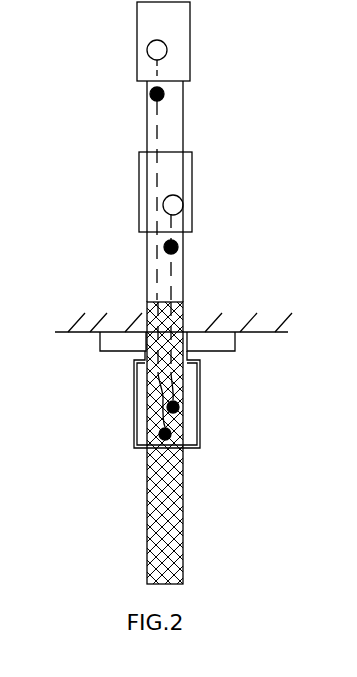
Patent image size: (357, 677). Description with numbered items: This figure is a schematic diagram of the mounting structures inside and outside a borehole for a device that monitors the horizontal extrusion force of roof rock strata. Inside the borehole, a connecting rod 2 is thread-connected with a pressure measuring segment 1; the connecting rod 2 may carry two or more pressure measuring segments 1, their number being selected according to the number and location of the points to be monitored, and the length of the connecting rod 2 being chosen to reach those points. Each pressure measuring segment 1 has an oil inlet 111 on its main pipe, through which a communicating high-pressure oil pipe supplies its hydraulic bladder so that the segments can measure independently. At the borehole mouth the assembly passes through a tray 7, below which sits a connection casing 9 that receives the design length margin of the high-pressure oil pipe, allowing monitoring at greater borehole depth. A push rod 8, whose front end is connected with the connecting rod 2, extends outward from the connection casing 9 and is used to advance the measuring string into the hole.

The pressure measuring segment 1 is at (143, 22).
The connecting rod 2 is at (148, 117).
The oil inlet 111 is at (178, 201).
The tray 7 is at (120, 352).
The connection casing 9 is at (135, 417).
The push rod 8 is at (147, 515).